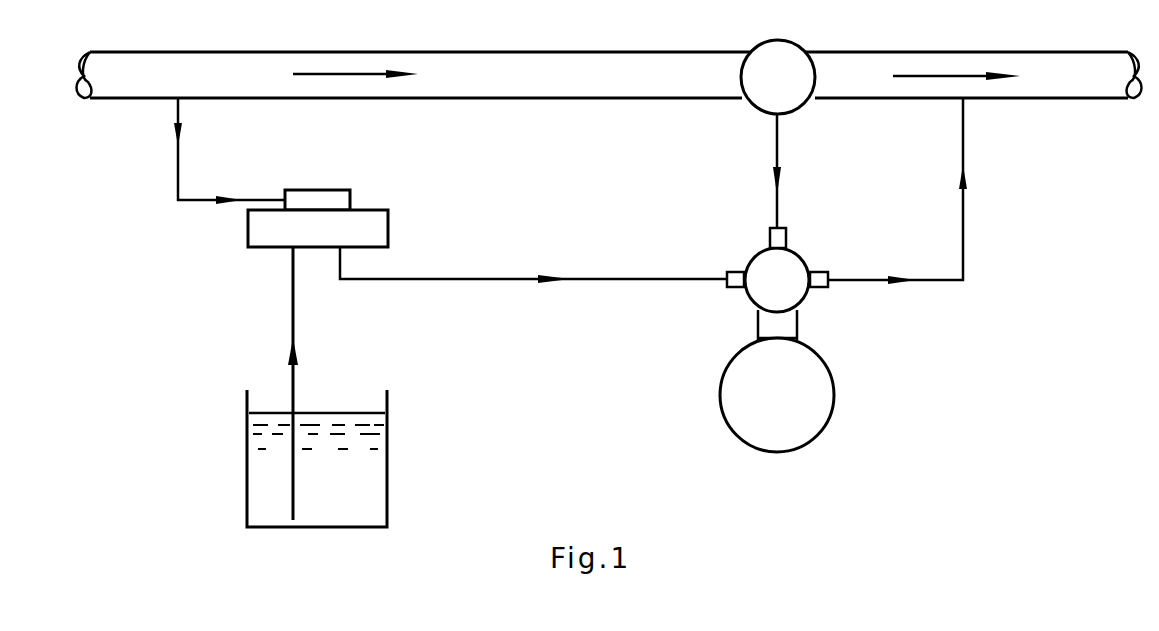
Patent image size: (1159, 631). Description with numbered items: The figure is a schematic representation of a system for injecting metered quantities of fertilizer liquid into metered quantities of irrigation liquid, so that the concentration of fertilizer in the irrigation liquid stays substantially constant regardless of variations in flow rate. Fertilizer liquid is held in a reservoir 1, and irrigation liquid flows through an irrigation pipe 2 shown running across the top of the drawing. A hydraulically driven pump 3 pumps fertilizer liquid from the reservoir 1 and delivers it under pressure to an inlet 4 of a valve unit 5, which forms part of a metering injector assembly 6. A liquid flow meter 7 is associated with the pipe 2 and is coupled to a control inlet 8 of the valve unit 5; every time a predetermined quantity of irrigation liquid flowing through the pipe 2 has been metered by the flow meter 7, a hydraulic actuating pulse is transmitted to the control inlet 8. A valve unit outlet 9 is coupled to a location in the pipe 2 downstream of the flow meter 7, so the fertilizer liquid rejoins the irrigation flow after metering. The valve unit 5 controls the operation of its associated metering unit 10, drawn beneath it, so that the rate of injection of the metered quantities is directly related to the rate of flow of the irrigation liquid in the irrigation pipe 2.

The reservoir 1 is at (387, 468).
The irrigation pipe 2 is at (453, 52).
The hydraulically driven pump 3 is at (362, 208).
The inlet 4 is at (727, 273).
The valve unit 5 is at (776, 260).
The metering injector assembly 6 is at (740, 304).
The liquid flow meter 7 is at (797, 42).
The control inlet 8 is at (786, 240).
The valve unit outlet 9 is at (828, 272).
The metering unit 10 is at (835, 400).